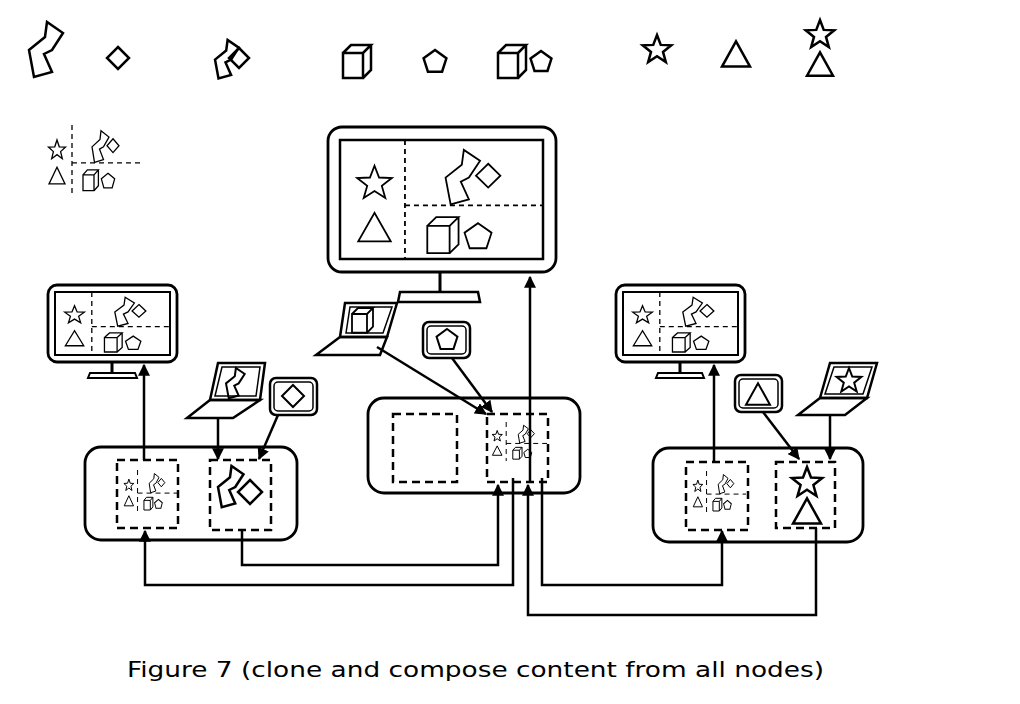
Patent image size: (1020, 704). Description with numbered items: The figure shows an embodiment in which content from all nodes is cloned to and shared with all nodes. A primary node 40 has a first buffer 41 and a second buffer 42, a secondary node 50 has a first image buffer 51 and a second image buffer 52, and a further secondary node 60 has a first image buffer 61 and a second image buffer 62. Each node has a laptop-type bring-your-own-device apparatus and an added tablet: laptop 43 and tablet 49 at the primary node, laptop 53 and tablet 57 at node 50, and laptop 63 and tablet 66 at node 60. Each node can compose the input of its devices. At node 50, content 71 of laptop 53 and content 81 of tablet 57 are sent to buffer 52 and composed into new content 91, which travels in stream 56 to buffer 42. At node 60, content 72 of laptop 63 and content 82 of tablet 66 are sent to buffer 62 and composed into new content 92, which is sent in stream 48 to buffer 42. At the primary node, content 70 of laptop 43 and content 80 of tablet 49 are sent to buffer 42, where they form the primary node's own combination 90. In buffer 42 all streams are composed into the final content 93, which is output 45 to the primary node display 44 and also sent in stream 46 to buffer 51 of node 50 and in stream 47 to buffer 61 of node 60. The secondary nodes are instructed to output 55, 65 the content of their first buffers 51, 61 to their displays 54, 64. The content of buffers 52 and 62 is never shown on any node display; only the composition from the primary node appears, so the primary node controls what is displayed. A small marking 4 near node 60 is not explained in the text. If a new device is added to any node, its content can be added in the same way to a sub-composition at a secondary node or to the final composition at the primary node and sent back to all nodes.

The content of laptop 71 is at (46, 27).
The content of tablet 81 is at (118, 48).
The new composed content 91 is at (218, 42).
The content of laptop 70 is at (356, 46).
The content of tablet 80 is at (432, 52).
The composed content of primary node devices 90 is at (524, 46).
The content of laptop 72 is at (662, 42).
The content of tablet 82 is at (735, 47).
The new composed content 92 is at (840, 50).
The final composed content 93 is at (112, 125).
The dedicated display of primary node 44 is at (556, 152).
The BYOD laptop 43 is at (350, 303).
The tablet 49 is at (463, 323).
The output to dedicated display 45 is at (533, 330).
The primary node 40 is at (460, 492).
The first buffer of primary node 41 is at (393, 427).
The second buffer of primary node 42 is at (550, 427).
The dedicated display of secondary node 54 is at (137, 285).
The output to dedicated display 55 is at (142, 405).
The BYOD laptop 53 is at (230, 364).
The tablet 57 is at (318, 380).
The secondary node 50 is at (170, 540).
The first image buffer of secondary node 51 is at (117, 480).
The second image buffer of secondary node 52 is at (271, 483).
The stream 46 is at (142, 563).
The stream 56 is at (427, 564).
The dedicated display of secondary node 64 is at (660, 285).
The output to dedicated display 65 is at (711, 408).
The tablet 66 is at (760, 375).
The BYOD laptop 63 is at (857, 363).
The secondary node 60 is at (755, 542).
The first image buffer of secondary node 61 is at (686, 505).
The second image buffer of secondary node 62 is at (835, 505).
The stream 47 is at (727, 568).
The stream 48 is at (818, 593).
The partial label near node 60 4 is at (652, 462).